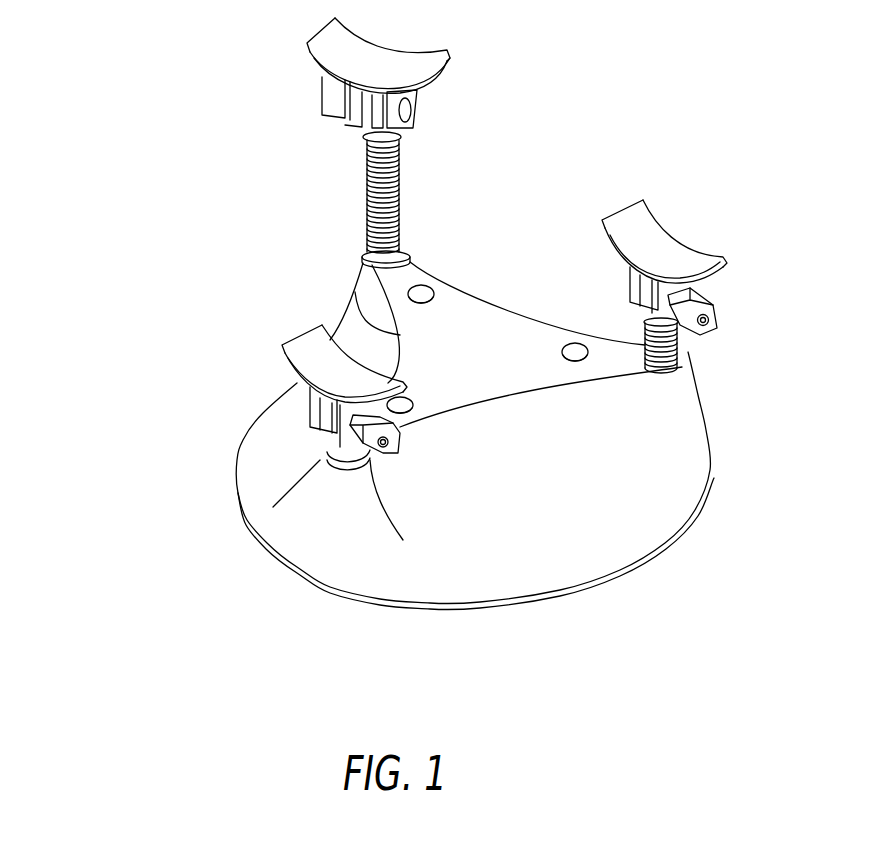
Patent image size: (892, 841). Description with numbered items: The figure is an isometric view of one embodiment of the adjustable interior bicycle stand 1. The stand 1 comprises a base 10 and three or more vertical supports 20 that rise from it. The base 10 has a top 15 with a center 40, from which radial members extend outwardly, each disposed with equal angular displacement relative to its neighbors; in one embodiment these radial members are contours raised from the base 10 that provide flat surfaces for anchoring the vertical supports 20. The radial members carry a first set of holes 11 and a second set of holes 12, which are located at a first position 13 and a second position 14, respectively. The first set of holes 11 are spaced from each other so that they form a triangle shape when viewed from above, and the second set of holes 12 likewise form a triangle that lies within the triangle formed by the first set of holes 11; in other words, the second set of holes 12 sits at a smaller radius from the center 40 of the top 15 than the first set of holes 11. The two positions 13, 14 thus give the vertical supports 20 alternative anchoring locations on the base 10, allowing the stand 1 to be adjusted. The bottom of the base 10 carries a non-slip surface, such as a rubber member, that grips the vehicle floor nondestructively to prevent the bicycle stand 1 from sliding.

The adjustable interior bicycle stand 1 is at (187, 593).
The base 10 is at (590, 530).
The first set of holes 11 is at (682, 355).
The second set of holes 12 is at (582, 360).
The first position 13 is at (438, 222).
The second position 14 is at (469, 264).
The top 15 is at (358, 303).
The vertical support 20 is at (400, 180).
The center 40 is at (475, 362).